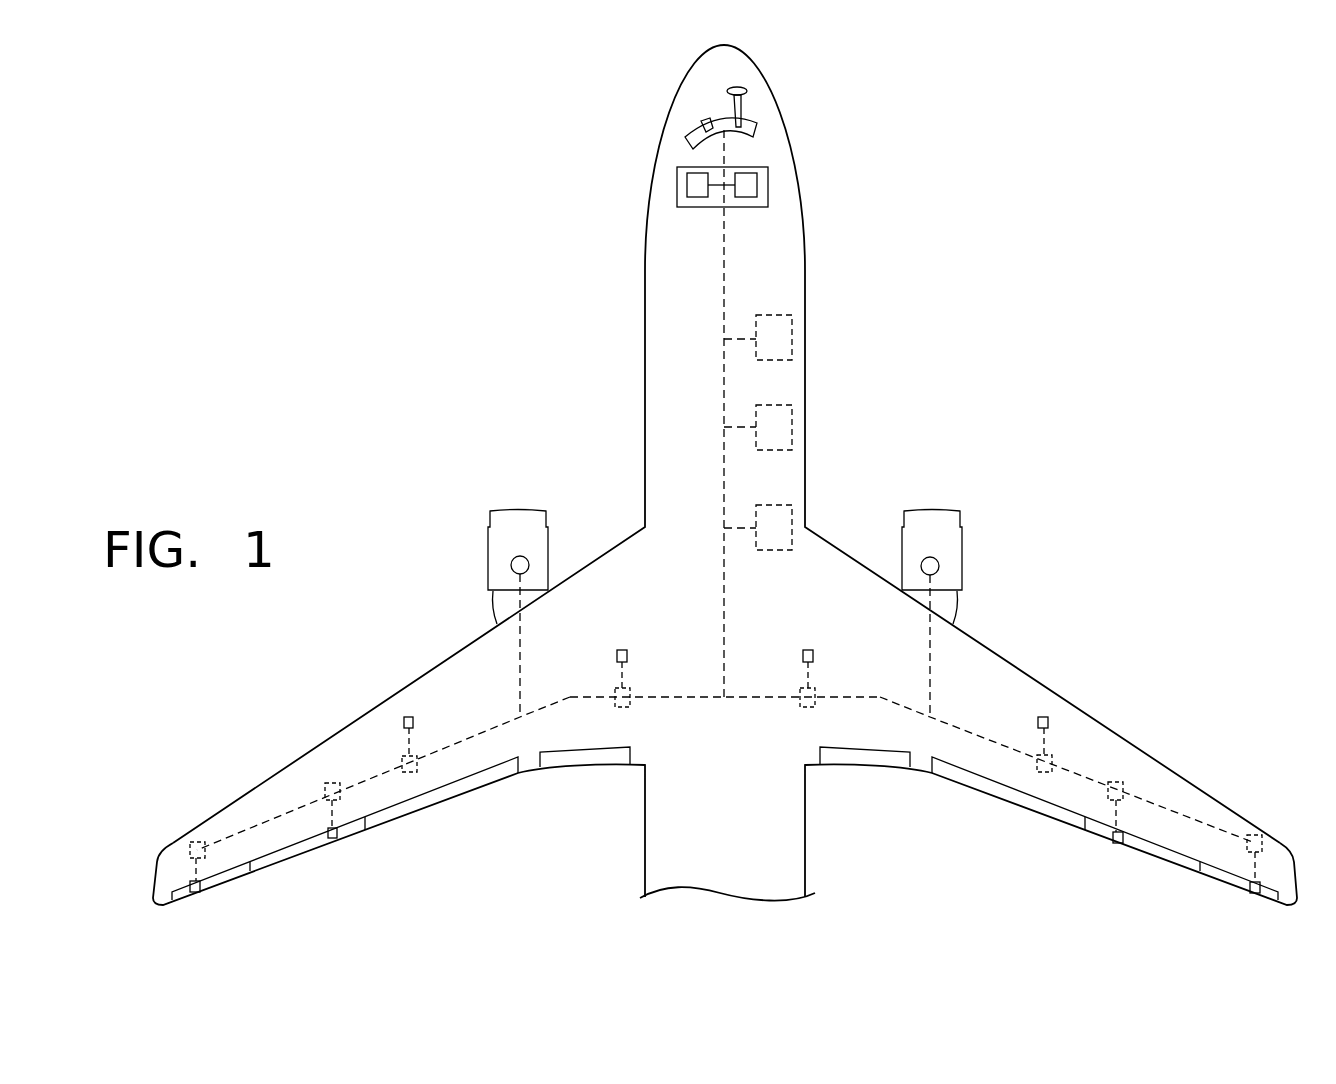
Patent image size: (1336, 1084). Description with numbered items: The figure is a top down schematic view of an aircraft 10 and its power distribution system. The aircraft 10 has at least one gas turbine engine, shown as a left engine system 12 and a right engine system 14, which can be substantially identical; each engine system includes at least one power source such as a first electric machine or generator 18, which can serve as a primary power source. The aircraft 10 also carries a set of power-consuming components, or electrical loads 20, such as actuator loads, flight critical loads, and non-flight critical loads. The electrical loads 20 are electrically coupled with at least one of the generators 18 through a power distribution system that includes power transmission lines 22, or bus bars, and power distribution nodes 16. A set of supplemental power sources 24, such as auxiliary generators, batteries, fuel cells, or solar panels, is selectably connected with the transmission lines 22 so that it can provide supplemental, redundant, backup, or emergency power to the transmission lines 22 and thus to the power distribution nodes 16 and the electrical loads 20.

The aircraft 10 is at (535, 73).
The left engine system 12 is at (518, 515).
The right engine system 14 is at (942, 520).
The power distribution node 16 is at (206, 851).
The generator 18 is at (531, 560).
The electrical load 20 is at (690, 198).
The power transmission line 22 is at (723, 393).
The supplemental power source 24 is at (789, 355).